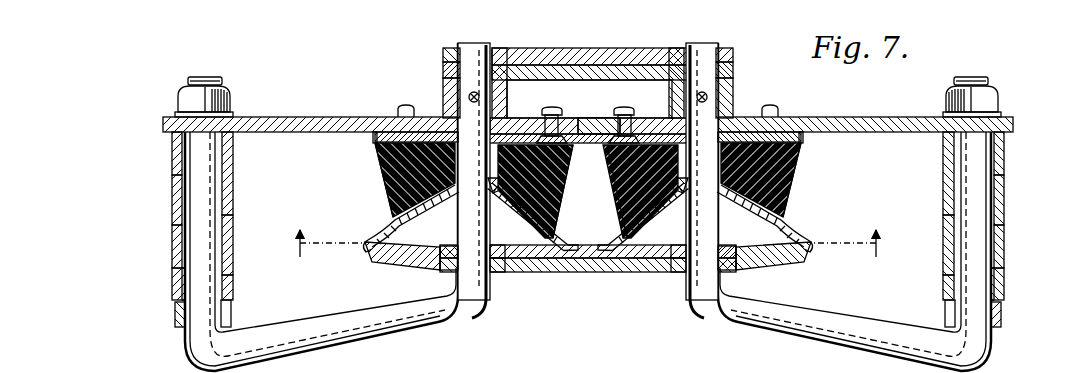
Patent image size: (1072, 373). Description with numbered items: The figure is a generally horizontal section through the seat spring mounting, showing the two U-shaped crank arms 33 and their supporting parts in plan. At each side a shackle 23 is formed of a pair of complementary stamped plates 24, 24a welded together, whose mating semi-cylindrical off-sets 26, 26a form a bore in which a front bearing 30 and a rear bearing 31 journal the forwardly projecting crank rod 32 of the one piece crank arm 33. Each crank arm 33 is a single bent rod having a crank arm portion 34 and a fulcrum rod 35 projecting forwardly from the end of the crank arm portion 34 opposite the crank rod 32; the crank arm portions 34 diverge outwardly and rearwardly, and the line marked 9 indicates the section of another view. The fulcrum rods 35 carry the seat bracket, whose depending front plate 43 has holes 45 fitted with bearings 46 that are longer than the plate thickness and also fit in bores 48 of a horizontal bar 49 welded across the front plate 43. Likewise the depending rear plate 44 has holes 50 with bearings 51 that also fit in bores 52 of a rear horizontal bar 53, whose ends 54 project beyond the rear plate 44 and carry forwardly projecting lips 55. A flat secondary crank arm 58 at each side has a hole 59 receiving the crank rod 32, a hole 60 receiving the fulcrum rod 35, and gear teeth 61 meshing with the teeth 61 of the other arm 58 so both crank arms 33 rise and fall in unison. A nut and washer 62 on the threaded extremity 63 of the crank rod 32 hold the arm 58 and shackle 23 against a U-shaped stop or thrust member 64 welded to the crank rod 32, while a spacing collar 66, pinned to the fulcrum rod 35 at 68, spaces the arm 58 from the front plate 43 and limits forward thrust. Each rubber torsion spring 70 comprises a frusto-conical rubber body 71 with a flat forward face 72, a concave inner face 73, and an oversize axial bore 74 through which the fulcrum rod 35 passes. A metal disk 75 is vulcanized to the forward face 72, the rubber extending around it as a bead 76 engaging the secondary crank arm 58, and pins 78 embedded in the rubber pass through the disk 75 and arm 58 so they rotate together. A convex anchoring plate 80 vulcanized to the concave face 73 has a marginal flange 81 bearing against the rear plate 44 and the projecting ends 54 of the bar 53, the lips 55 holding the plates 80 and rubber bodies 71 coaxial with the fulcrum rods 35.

The section line 9- 9 is at (321, 243).
The shackle 23 is at (170, 289).
The stamped plate 24 is at (172, 211).
The stamped plate 24a is at (228, 193).
The semi-cylindrical off-set 26 is at (172, 238).
The semi-cylindrical off-set 26a is at (228, 218).
The front bearing 30 is at (175, 279).
The rear bearing 31 is at (172, 150).
The crank rod 32 is at (205, 248).
The U-shaped crank arm 33 is at (312, 316).
The crank arm portion 34 is at (365, 315).
The fulcrum rod 35 is at (472, 43).
The depending front plate 43 is at (636, 72).
The depending rear plate 44 is at (590, 258).
The hole 45 is at (443, 70).
The bearing 46 is at (443, 52).
The bore 48 is at (499, 52).
The horizontal bar 49 is at (583, 53).
The hole 50 is at (518, 260).
The bearing 51 is at (440, 268).
The bore 52 is at (500, 273).
The horizontal bar 53 is at (617, 265).
The end of rear cross bar 54 is at (402, 265).
The lip 55 is at (368, 238).
The secondary crank arm 58 is at (289, 119).
The hole 59 is at (234, 121).
The hole 60 is at (428, 133).
The gear teeth 61 is at (590, 126).
The nut and washer 62 is at (184, 98).
The threaded forward extremity 63 is at (207, 77).
The stop or thrust member 64 is at (176, 313).
The spacing collar 66 is at (443, 86).
The pin 68 is at (479, 97).
The rubber torsion spring 70 is at (368, 189).
The frusto-conical rubber body 71 is at (392, 204).
The flat forward face 72 is at (512, 133).
The concave inner face 73 is at (405, 232).
The axial bore 74 is at (505, 197).
The metal disk 75 is at (534, 134).
The bead 76 is at (376, 132).
The pin 78 is at (404, 106).
The convex metal anchoring plate 80 is at (540, 230).
The marginal flange 81 is at (583, 246).